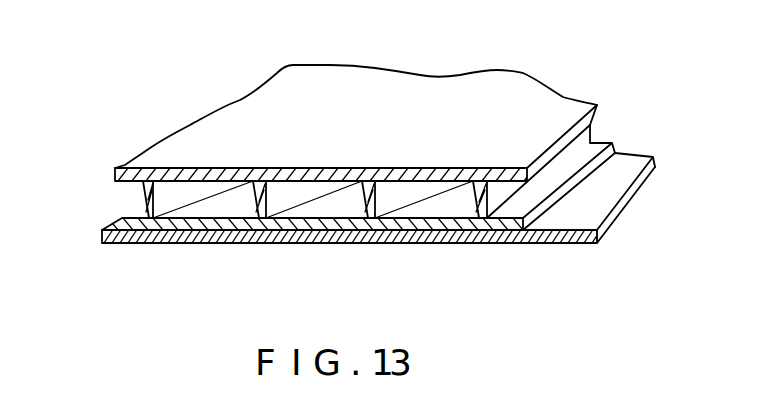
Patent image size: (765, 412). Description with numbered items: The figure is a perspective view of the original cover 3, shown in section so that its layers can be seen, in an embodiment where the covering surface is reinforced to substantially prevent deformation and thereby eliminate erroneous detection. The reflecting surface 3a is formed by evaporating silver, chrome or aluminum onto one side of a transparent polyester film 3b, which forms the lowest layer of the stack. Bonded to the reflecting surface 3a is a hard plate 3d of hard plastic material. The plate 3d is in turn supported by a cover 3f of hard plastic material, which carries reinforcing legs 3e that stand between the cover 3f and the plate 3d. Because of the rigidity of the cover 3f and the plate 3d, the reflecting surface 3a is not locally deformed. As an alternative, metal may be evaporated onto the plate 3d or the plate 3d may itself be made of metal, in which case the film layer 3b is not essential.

The original cover 3 is at (528, 73).
The reflecting surface 3a is at (598, 196).
The transparent polyester film 3b is at (566, 243).
The hard plate 3d is at (596, 152).
The reinforcing legs 3e is at (152, 201).
The cover 3f is at (163, 141).